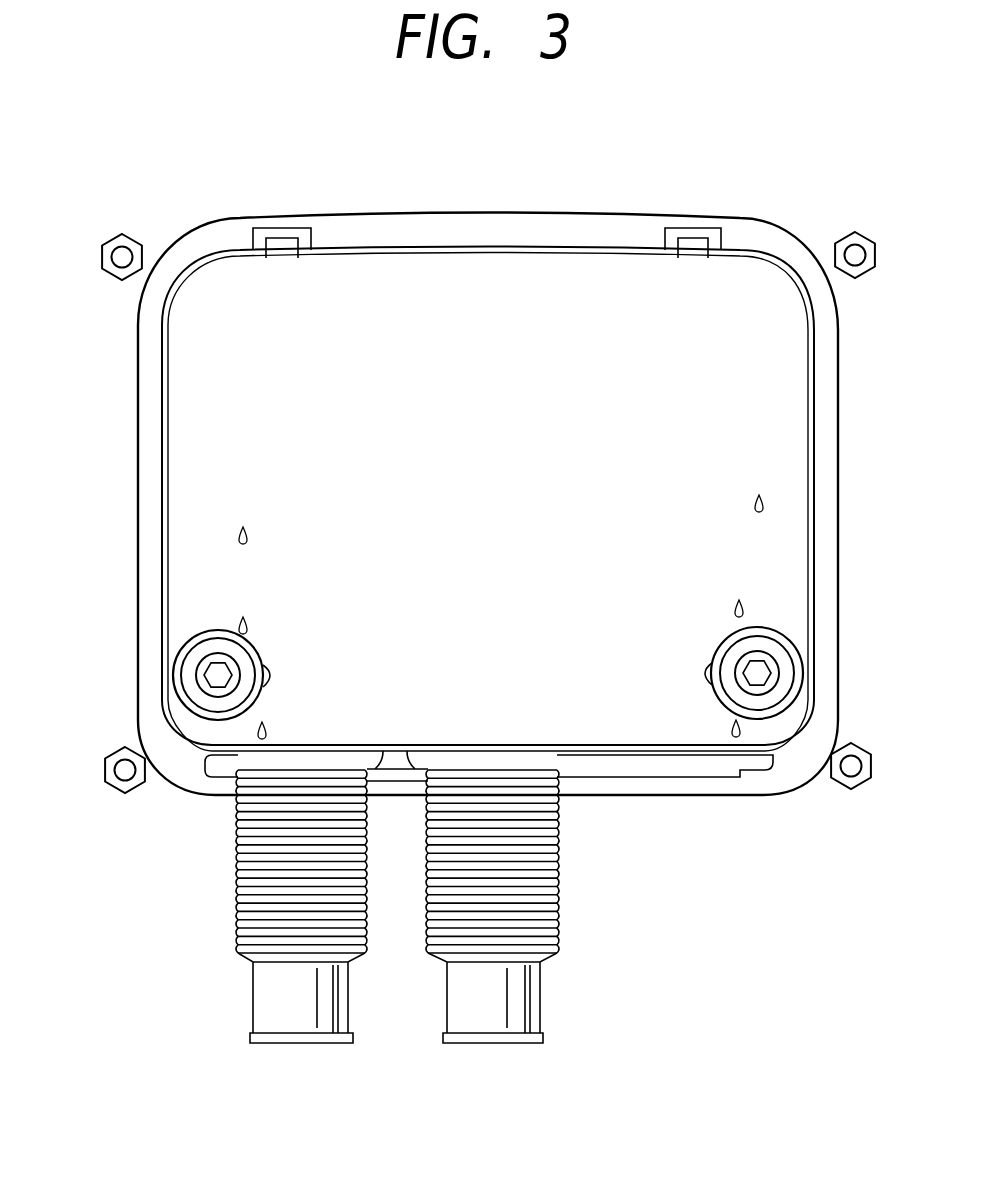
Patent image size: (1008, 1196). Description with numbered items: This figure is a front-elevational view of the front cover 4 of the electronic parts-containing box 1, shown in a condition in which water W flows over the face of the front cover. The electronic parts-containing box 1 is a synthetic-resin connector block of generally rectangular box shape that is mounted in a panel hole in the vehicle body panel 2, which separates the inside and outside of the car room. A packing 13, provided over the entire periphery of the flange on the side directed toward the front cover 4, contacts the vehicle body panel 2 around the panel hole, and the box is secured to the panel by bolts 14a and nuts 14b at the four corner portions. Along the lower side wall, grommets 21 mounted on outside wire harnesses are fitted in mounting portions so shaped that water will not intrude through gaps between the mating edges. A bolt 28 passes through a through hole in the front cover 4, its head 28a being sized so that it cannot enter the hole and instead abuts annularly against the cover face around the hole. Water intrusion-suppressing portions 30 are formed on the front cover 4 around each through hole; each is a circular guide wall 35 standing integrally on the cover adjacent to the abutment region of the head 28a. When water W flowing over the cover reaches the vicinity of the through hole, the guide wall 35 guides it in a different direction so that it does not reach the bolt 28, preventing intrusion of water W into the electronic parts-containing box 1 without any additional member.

The electronic parts-containing box 1 is at (590, 200).
The vehicle body panel 2 is at (462, 123).
The front cover 4 is at (770, 380).
The packing 13 is at (148, 482).
The bolt 14a is at (136, 246).
The nut 14b is at (107, 241).
The grommet 21 is at (237, 892).
The bolt 28 is at (206, 680).
The head 28a is at (232, 670).
The water intrusion-suppressing portion 30 is at (184, 626).
The guide wall 35 is at (183, 646).
The water W is at (764, 500).